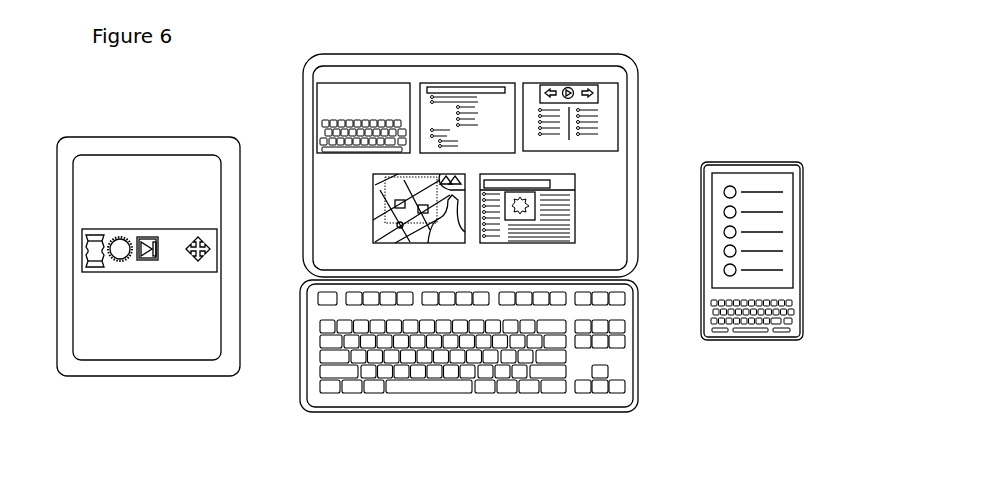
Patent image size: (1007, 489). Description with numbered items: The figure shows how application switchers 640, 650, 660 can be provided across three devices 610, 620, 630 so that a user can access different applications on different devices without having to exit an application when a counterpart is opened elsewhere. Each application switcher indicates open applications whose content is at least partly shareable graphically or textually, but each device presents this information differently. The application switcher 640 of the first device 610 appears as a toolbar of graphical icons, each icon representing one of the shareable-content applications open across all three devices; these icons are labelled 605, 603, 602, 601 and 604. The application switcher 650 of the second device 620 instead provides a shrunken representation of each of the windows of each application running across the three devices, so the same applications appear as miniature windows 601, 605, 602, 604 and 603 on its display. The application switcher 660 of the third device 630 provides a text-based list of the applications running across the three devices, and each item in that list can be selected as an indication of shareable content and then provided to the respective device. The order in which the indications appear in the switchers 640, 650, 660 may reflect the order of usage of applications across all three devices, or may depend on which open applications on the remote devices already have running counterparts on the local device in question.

The note/word processing application icon and window 601 is at (177, 262).
The media player application icon and window 602 is at (148, 262).
The settings/web browser application icon and window 603 is at (118, 262).
The map application icon and window 604 is at (207, 262).
The bookmark/list application icon and window 605 is at (97, 264).
The device 610 is at (185, 148).
The device 620 is at (628, 375).
The device 630 is at (746, 160).
The application switcher 640 is at (112, 229).
The application switcher 650 is at (628, 237).
The application switcher 660 is at (780, 188).